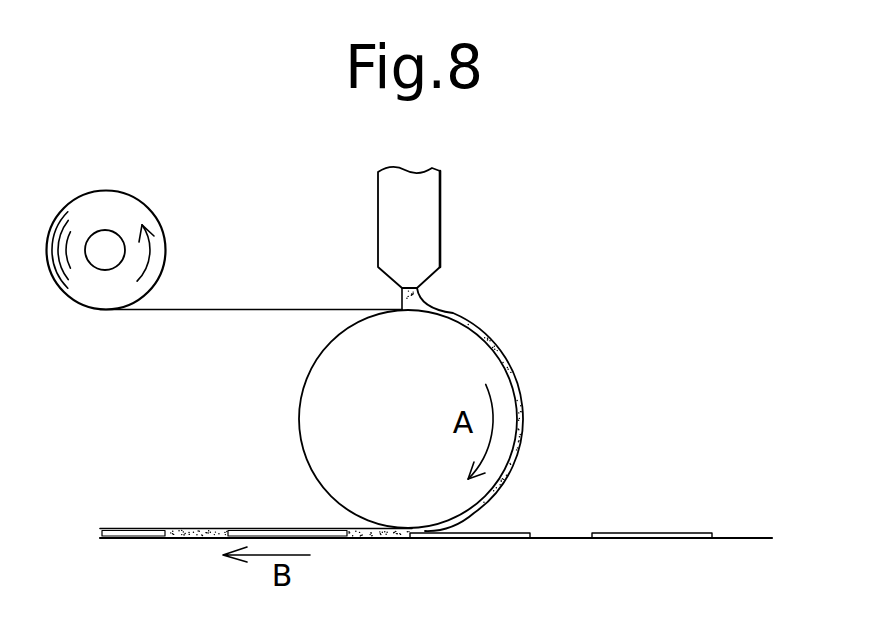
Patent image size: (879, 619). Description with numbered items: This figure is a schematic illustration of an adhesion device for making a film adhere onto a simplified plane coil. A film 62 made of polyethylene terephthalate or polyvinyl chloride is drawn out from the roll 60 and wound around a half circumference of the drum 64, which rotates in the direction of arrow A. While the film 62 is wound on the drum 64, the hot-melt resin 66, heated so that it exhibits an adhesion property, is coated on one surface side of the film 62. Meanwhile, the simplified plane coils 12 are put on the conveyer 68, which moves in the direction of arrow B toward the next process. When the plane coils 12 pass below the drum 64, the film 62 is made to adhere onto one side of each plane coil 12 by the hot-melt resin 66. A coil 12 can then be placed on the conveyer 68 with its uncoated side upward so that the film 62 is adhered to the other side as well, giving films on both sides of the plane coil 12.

The roll 60 is at (108, 207).
The film 62 is at (262, 308).
The drum 64 is at (316, 417).
The hot-melt resin 66 is at (502, 342).
The conveyer 68 is at (571, 537).
The simplified plane coil 12 is at (515, 531).